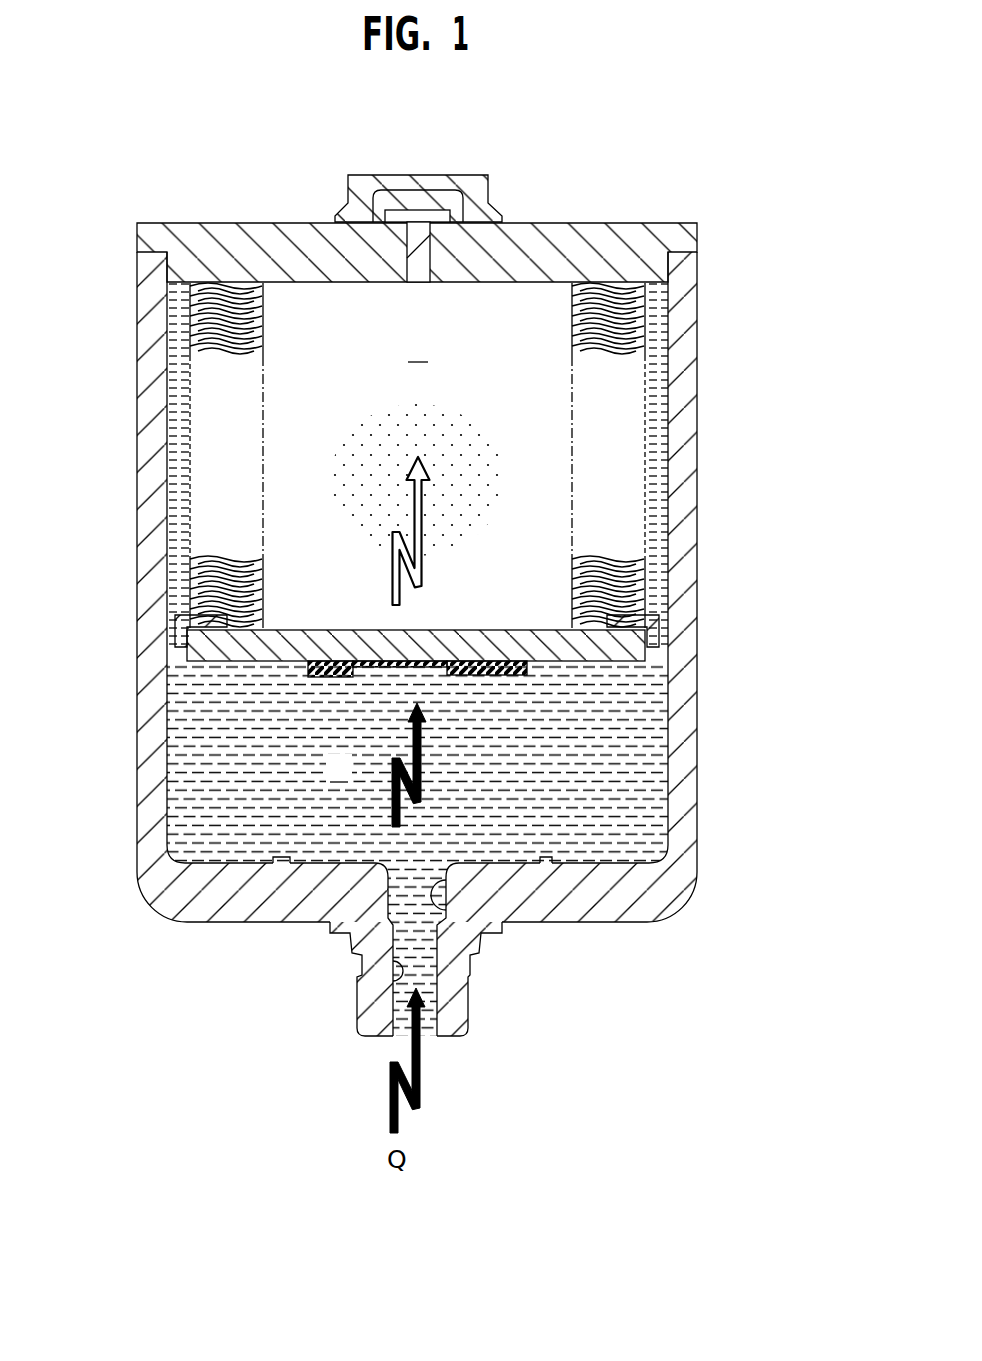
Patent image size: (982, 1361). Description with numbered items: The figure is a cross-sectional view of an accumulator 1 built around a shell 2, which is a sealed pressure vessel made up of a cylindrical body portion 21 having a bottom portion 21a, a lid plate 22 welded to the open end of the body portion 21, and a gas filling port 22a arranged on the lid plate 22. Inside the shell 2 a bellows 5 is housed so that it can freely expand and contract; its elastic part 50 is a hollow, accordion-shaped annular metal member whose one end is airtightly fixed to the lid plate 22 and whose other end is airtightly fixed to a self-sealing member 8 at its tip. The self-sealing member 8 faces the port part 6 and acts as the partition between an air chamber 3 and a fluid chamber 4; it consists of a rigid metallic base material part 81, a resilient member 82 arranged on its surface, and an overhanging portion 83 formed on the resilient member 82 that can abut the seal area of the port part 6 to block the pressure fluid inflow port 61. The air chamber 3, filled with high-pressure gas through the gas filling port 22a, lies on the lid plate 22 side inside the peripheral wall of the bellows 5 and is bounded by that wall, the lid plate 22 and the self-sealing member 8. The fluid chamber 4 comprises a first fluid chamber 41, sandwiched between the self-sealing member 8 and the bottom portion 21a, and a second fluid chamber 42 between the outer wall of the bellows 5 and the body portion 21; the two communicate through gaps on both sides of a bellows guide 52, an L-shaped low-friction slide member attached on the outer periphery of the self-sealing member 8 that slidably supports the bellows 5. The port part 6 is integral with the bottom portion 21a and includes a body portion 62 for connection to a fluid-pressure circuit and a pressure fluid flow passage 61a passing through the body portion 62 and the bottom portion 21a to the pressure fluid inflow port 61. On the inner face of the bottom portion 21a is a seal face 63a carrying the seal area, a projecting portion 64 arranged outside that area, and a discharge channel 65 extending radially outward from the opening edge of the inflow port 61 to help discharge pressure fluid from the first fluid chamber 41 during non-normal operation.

The accumulator 1 is at (725, 155).
The shell 2 is at (780, 237).
The body portion 21 is at (685, 318).
The bottom portion 21a is at (222, 922).
The lid plate 22 is at (667, 223).
The gas filling port 22a is at (418, 245).
The air chamber 3 is at (528, 327).
The fluid chamber 4 is at (474, 685).
The first fluid chamber 41 is at (612, 762).
The second fluid chamber 42 is at (648, 450).
The bellows 5 is at (188, 490).
The elastic part 50 is at (222, 410).
The bellows guide 52 is at (187, 630).
The port part 6 is at (487, 836).
The pressure fluid inflow port 61 is at (446, 905).
The pressure fluid flow passage 61a is at (405, 973).
The body portion 62 is at (469, 1005).
The seal face 63a is at (518, 862).
The projecting portion 64 is at (280, 853).
The discharge channel 65 is at (383, 853).
The self-sealing member 8 is at (757, 640).
The base material part 81 is at (540, 655).
The resilient member 82 is at (447, 663).
The overhanging portion 83 is at (332, 678).